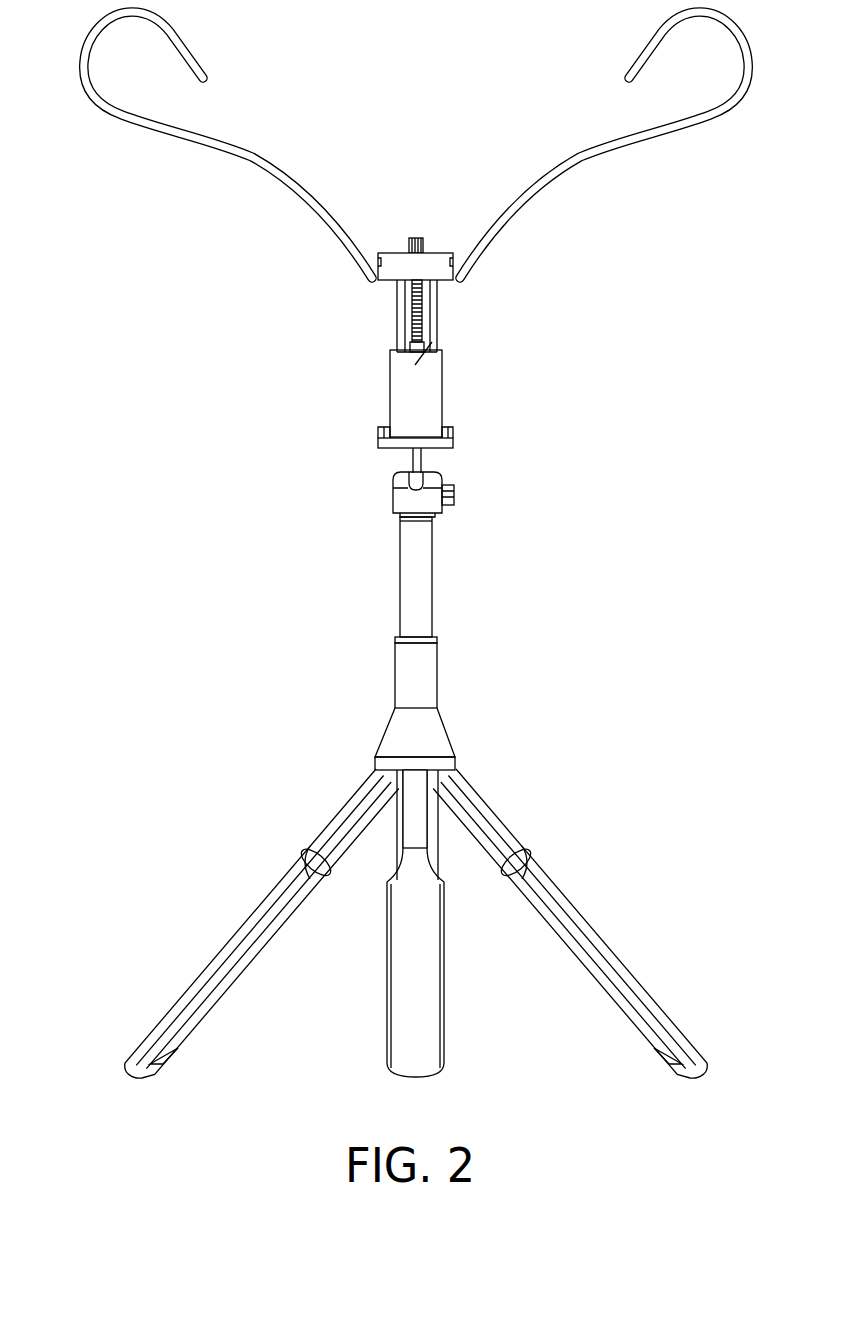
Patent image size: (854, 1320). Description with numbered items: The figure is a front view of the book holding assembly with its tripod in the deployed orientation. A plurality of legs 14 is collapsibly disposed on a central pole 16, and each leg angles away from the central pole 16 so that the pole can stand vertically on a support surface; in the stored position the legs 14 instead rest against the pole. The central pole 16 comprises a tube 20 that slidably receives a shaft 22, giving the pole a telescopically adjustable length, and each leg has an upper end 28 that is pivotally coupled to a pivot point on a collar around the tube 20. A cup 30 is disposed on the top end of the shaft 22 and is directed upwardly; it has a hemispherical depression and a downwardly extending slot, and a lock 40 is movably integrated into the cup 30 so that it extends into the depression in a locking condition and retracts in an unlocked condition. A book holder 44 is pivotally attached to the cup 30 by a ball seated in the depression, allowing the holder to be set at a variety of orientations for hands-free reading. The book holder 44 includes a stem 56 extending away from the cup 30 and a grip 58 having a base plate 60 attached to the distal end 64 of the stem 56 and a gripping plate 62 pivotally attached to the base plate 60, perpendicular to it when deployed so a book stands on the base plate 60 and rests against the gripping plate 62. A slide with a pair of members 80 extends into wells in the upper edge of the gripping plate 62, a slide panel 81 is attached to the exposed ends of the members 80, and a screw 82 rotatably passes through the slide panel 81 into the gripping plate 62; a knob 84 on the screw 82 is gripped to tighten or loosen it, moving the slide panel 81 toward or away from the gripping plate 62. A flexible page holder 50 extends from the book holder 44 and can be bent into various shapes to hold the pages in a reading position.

The legs 14 is at (220, 943).
The central pole 16 is at (387, 623).
The tube 20 is at (437, 686).
The shaft 22 is at (432, 565).
The upper end 28 is at (415, 767).
The cup 30 is at (393, 497).
The lock 40 is at (454, 489).
The book holder 44 is at (358, 353).
The flexible page holder 50 is at (320, 207).
The stem 56 is at (412, 462).
The grip 58 is at (439, 362).
The base plate 60 is at (388, 428).
The gripping plate 62 is at (432, 342).
The distal end 64 is at (418, 450).
The members 80 is at (435, 305).
The slide panel 81 is at (445, 253).
The screw 82 is at (416, 299).
The knob 84 is at (410, 237).